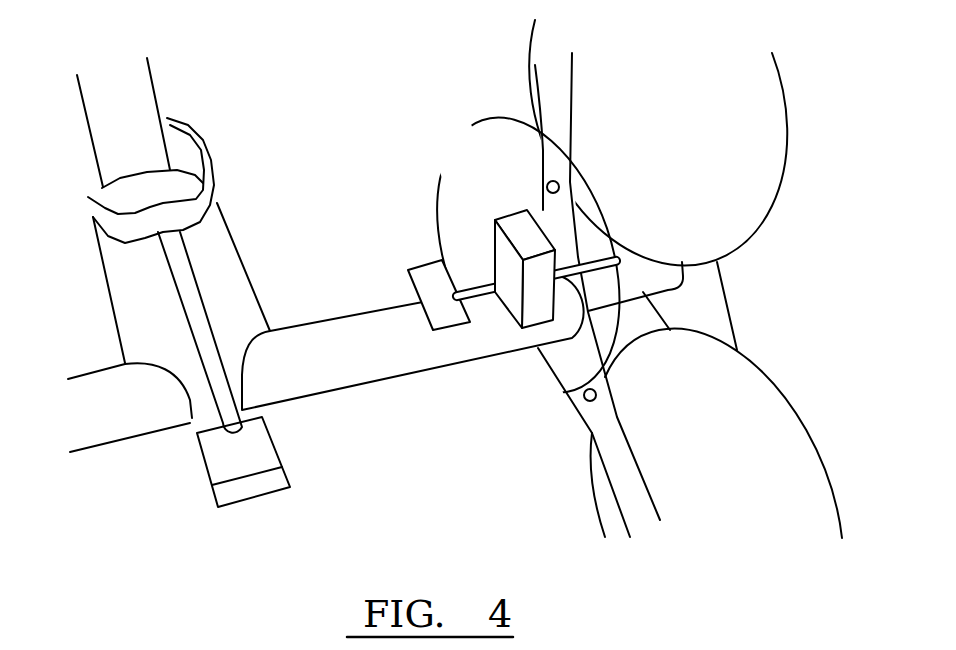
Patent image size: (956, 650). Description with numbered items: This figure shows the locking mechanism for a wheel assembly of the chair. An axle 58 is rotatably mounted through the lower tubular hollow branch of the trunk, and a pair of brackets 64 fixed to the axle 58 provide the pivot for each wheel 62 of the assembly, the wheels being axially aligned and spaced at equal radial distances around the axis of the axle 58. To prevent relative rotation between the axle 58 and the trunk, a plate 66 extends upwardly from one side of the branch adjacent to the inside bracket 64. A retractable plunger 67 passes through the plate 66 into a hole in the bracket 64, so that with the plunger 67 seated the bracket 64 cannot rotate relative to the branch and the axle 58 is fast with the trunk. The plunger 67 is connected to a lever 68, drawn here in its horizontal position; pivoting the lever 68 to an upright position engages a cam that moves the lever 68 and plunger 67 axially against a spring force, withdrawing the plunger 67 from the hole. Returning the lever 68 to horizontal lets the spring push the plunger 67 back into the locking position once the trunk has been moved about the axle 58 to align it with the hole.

The axle 58 is at (628, 282).
The wheel 62 is at (781, 155).
The bracket 64 is at (720, 278).
The plate 66 is at (527, 237).
The retractable plunger 67 is at (593, 257).
The lever 68 is at (423, 282).